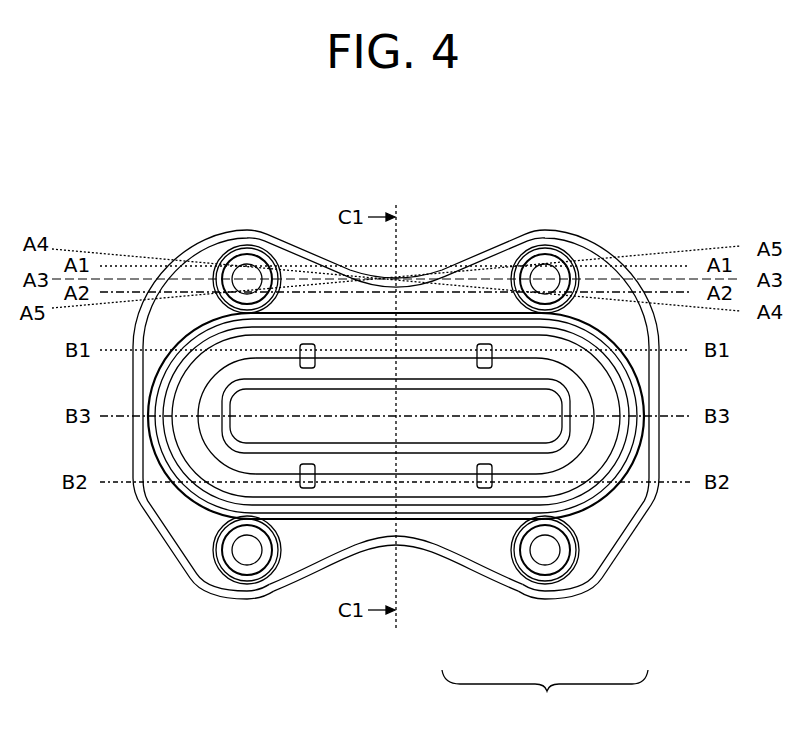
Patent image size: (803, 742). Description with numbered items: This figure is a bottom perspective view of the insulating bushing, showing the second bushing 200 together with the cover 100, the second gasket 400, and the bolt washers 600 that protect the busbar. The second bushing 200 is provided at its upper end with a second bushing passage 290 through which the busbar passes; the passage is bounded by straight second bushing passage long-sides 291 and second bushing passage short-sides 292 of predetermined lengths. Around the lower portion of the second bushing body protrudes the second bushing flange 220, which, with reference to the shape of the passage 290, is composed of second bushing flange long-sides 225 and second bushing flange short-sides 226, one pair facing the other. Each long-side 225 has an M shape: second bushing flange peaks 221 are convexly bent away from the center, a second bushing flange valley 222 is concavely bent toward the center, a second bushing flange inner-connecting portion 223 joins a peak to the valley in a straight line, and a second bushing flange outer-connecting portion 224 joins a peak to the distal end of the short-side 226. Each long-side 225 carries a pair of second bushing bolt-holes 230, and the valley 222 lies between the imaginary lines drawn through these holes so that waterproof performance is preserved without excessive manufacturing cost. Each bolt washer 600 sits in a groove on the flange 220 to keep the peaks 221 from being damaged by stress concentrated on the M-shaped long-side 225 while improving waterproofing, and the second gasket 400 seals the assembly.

The cover 100 is at (432, 415).
The second bushing 200 is at (432, 422).
The second bushing flange 220 is at (630, 512).
The second bushing flange peak 221 is at (547, 585).
The second bushing flange valley 222 is at (402, 546).
The second bushing flange inner-connecting portion 223 is at (480, 567).
The second bushing flange outer-connecting portion 224 is at (612, 560).
The second bushing flange long-side 225 is at (545, 693).
The second bushing flange short-side 226 is at (651, 381).
The second bushing bolt-hole 230 is at (242, 549).
The second bushing passage 290 is at (290, 426).
The second bushing passage long-side 291 is at (283, 389).
The second bushing passage short-side 292 is at (242, 421).
The second gasket 400 is at (640, 447).
The bolt washer 600 is at (216, 553).